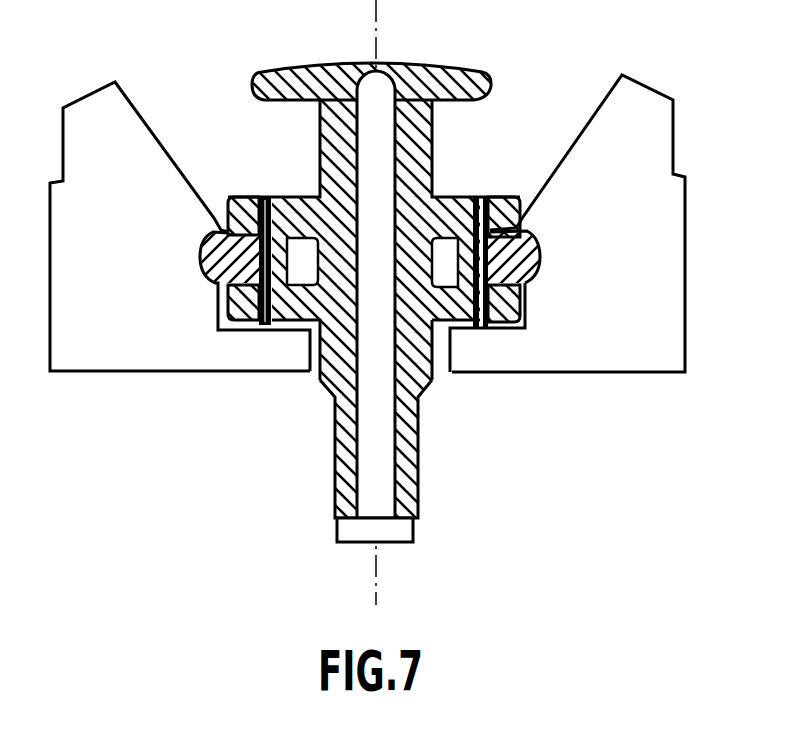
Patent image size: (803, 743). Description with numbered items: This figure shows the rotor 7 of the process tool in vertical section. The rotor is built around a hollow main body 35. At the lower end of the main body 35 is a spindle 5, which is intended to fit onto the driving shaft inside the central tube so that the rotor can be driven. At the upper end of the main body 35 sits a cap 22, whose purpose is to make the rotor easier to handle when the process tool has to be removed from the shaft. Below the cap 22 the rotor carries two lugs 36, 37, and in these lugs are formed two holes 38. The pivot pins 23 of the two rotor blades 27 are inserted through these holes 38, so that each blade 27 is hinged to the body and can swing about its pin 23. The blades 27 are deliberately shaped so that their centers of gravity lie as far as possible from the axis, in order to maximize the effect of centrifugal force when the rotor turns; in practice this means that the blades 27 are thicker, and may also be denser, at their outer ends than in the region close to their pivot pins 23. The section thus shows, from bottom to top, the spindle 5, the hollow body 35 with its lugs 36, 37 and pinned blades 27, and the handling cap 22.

The rotor 7 is at (156, 101).
The cap 22 is at (468, 72).
The pivot pins 23 is at (482, 197).
The rotor blades 27 is at (150, 254).
The main body 35 is at (319, 148).
The lug 36 is at (230, 197).
The lug 37 is at (449, 373).
The holes 38 is at (462, 197).
The spindle 5 is at (419, 490).